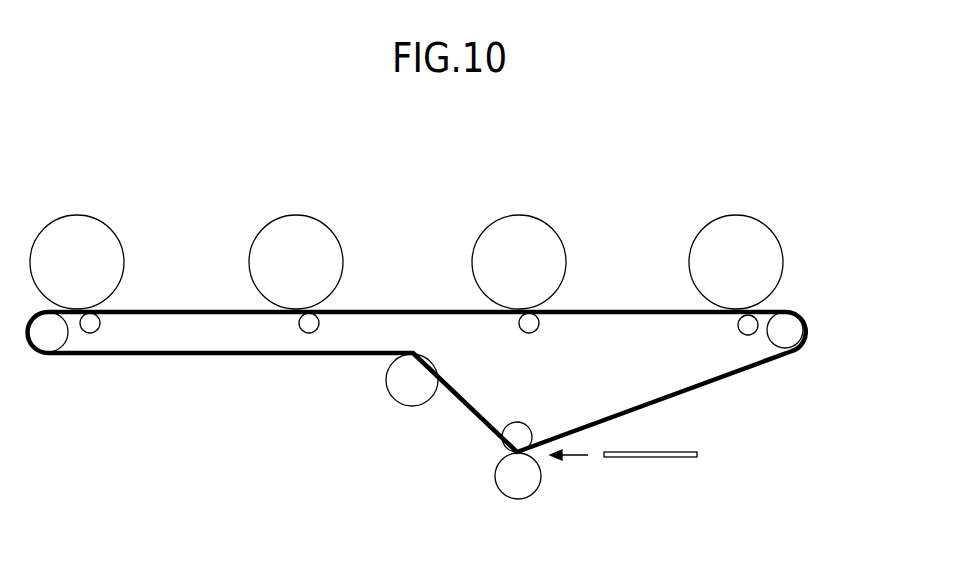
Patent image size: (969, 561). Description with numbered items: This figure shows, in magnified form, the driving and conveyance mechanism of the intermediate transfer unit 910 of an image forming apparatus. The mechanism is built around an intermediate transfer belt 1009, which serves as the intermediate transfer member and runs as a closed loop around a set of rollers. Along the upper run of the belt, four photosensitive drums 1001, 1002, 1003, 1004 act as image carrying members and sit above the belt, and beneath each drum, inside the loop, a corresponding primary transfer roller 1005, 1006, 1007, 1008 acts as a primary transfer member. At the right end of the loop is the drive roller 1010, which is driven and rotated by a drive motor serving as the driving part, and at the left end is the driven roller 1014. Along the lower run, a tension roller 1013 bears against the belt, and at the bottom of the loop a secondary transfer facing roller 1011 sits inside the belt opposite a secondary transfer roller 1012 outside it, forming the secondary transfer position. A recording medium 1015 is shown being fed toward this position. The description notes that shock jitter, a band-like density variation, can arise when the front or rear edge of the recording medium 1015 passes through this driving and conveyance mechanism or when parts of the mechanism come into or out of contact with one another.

The intermediate transfer unit 910 is at (222, 465).
The photosensitive drum 1001 is at (77, 237).
The photosensitive drum 1002 is at (296, 237).
The photosensitive drum 1003 is at (519, 237).
The photosensitive drum 1004 is at (736, 237).
The primary transfer roller 1005 is at (90, 323).
The primary transfer roller 1006 is at (309, 323).
The primary transfer roller 1007 is at (529, 323).
The primary transfer roller 1008 is at (748, 325).
The intermediate transfer belt 1009 is at (653, 402).
The drive roller 1010 is at (785, 330).
The secondary transfer facing roller 1011 is at (520, 435).
The secondary transfer roller 1012 is at (518, 492).
The tension roller 1013 is at (415, 392).
The driven roller 1014 is at (48, 342).
The recording medium 1015 is at (677, 457).